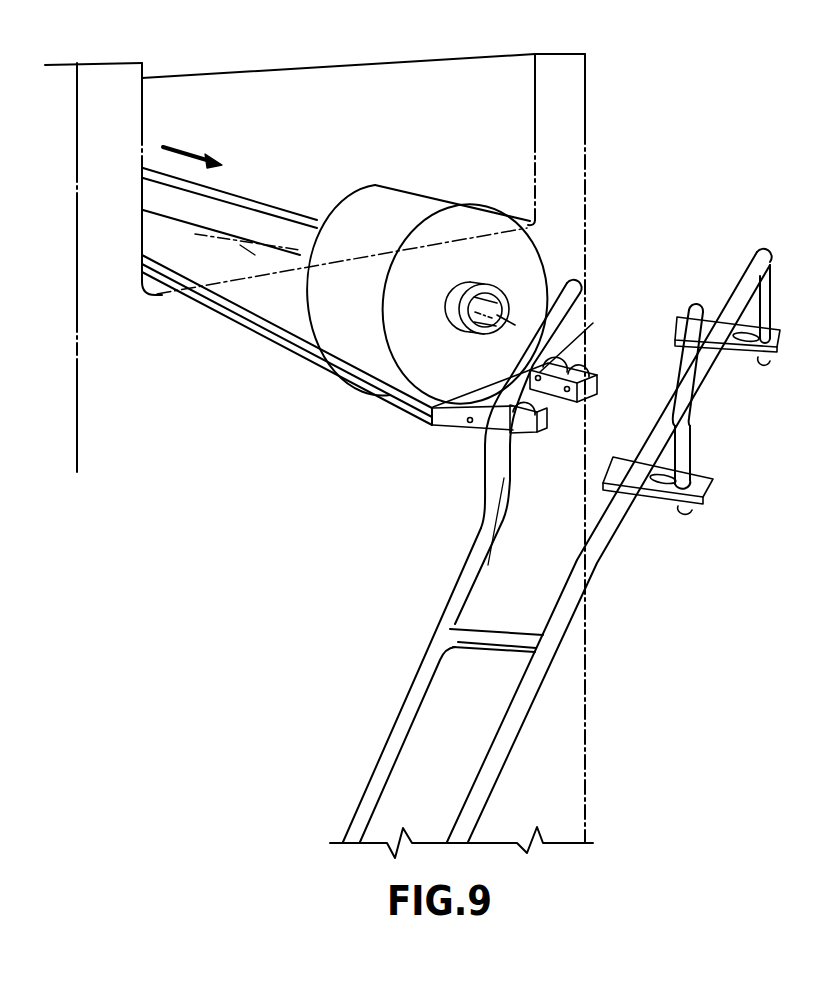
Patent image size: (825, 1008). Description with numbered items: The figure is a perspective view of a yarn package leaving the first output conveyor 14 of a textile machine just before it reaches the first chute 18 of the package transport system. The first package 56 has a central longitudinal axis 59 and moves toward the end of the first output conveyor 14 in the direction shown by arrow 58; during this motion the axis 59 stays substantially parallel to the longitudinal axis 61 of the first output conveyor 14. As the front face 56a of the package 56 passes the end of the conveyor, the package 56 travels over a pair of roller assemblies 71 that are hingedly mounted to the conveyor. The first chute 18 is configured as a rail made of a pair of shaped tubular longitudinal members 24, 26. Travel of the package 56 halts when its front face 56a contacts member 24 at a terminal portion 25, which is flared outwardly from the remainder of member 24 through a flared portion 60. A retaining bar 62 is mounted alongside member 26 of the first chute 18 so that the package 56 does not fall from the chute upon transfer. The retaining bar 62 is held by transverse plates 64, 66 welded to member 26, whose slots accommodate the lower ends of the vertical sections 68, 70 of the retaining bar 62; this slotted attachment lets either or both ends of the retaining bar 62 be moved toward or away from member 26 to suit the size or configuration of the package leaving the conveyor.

The first output conveyor 14 is at (300, 215).
The first chute 18 is at (620, 600).
The shaped tubular longitudinal member 24 is at (395, 730).
The terminal portion 25 is at (570, 280).
The shaped tubular longitudinal member 26 is at (493, 758).
The first package 56 is at (393, 200).
The front face 56a is at (485, 215).
The arrow 58 is at (187, 146).
The central longitudinal axis 59 is at (268, 238).
The flared portion 60 is at (494, 478).
The longitudinal axis 61 is at (245, 250).
The retaining bar 62 is at (703, 377).
The transverse plate 64 is at (703, 507).
The transverse plate 66 is at (772, 358).
The vertical section 68 is at (693, 453).
The vertical section 70 is at (763, 303).
The roller assemblies 71 is at (593, 390).